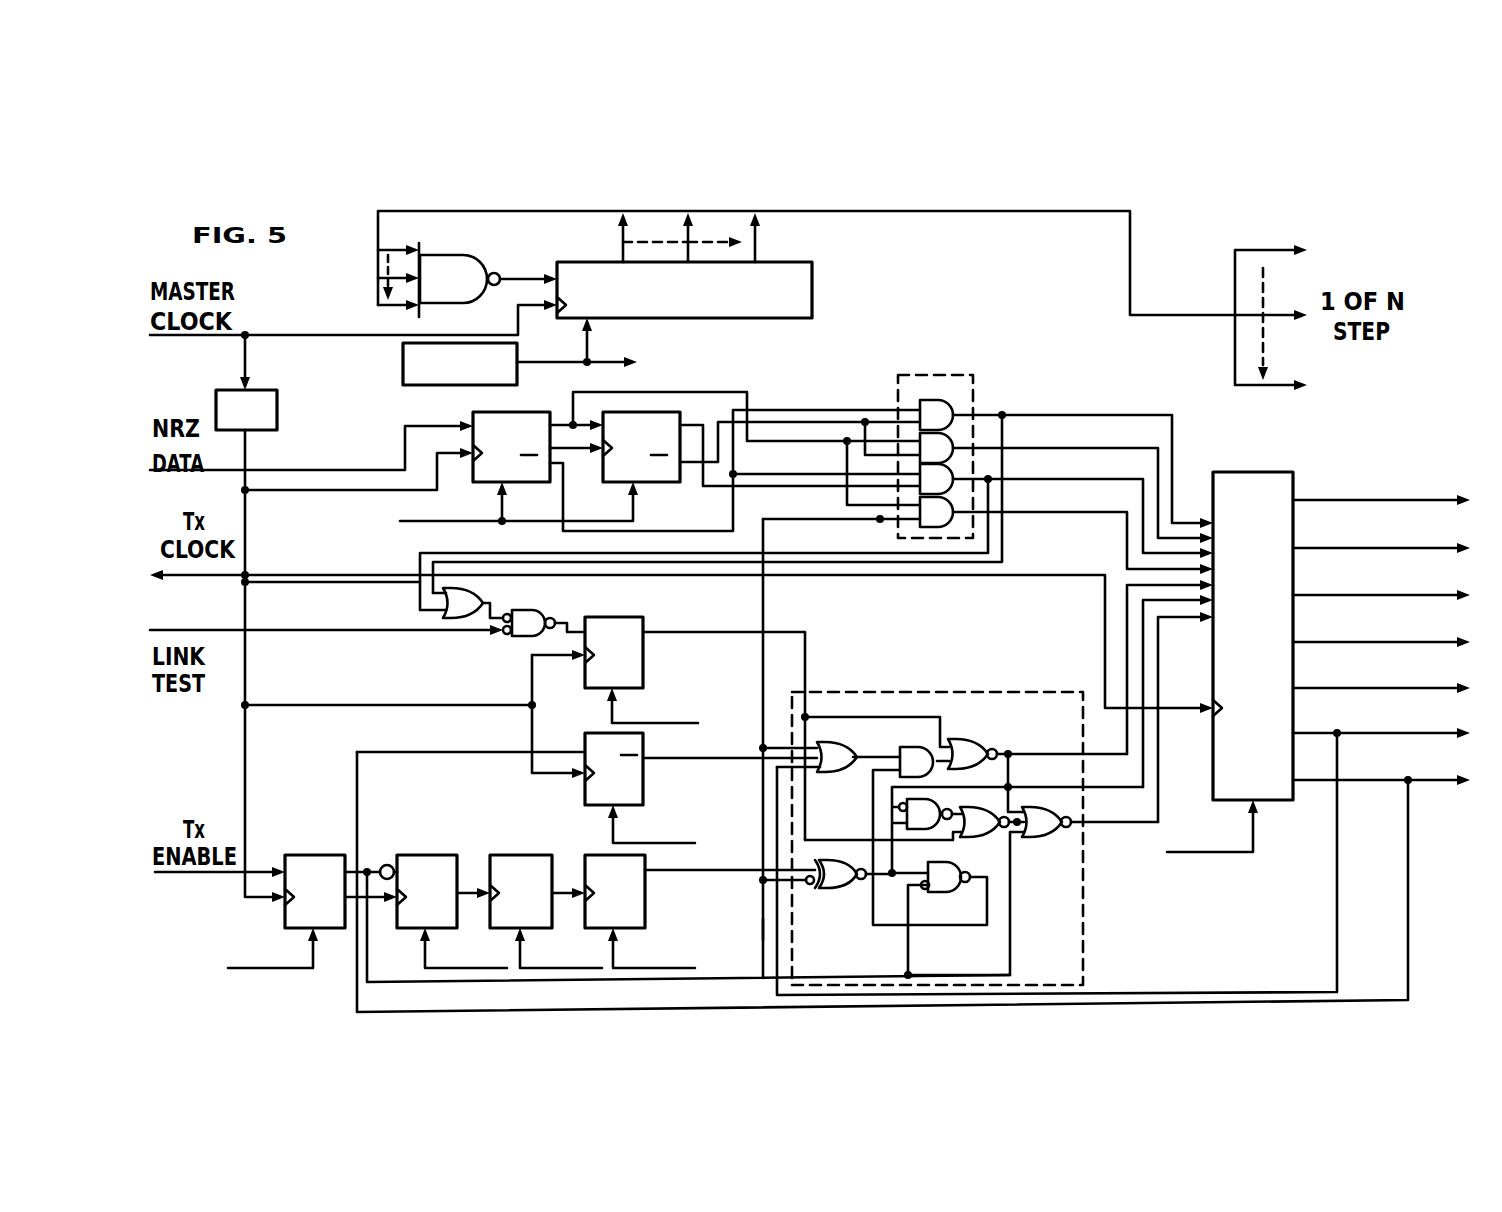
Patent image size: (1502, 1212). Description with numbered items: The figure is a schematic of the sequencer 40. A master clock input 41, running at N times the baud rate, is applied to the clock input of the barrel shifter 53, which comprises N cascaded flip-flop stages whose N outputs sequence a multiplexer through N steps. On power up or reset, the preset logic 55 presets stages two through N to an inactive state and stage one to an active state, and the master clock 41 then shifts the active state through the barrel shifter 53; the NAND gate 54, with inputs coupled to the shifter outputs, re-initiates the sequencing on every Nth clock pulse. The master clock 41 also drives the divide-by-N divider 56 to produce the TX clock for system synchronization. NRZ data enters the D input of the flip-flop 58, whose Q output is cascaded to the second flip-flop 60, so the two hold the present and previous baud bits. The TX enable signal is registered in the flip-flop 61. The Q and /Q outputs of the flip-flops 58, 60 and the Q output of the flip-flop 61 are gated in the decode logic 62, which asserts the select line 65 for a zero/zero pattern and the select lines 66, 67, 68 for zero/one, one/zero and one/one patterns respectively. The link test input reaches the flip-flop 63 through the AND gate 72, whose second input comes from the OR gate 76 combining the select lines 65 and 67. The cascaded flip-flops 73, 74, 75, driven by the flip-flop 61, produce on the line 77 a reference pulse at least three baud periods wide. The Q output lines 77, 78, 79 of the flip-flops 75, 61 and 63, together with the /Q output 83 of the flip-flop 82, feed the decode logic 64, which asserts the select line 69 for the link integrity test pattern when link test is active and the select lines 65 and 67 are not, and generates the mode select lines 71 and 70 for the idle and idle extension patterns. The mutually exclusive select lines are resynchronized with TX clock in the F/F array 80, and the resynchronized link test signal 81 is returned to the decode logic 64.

The sequencer 40 is at (1432, 242).
The master clock input 41 is at (328, 333).
The barrel shifter 53 is at (812, 283).
The NAND gate 54 is at (470, 257).
The preset logic 55 is at (403, 365).
The divide-by-N divider 56 is at (277, 405).
The flip-flop 58 is at (473, 414).
The second flip-flop 60 is at (657, 483).
The flip-flop 61 is at (325, 854).
The decode logic 62 is at (935, 375).
The flip-flop 63 is at (630, 617).
The decode logic 64 is at (910, 690).
The select line 65 is at (1112, 410).
The select line 66 is at (1095, 447).
The select line 67 is at (1088, 478).
The select line 68 is at (1083, 513).
The select line 69 is at (1127, 662).
The mode select line 70 is at (1143, 800).
The mode select line 71 is at (1110, 826).
The AND gate 72 is at (518, 637).
The cascaded flip-flop 73 is at (440, 855).
The cascaded flip-flop 74 is at (520, 855).
The cascaded flip-flop 75 is at (600, 855).
The OR gate 76 is at (480, 595).
The Q output line 77 is at (720, 862).
The Q output line 78 is at (765, 918).
The Q output line 79 is at (736, 633).
The F/F array 80 is at (1258, 472).
The resynchronized link test signal 81 is at (768, 792).
The flip-flop 82 is at (592, 733).
The /Q output line 83 is at (693, 757).